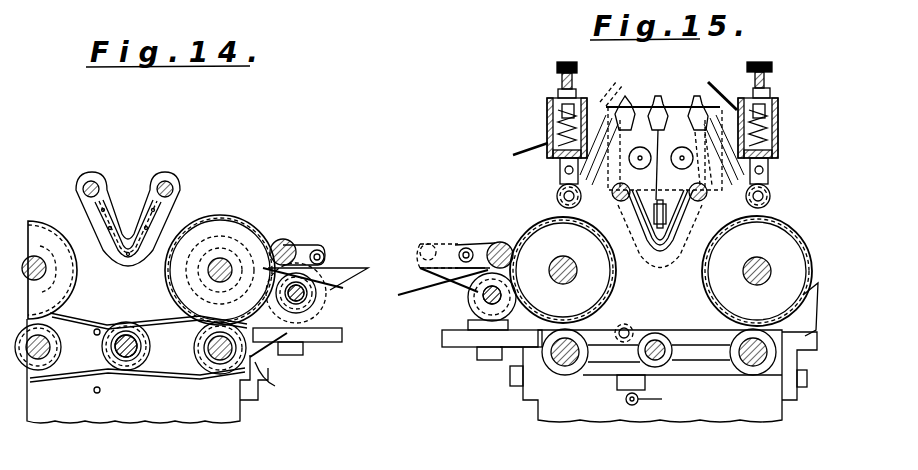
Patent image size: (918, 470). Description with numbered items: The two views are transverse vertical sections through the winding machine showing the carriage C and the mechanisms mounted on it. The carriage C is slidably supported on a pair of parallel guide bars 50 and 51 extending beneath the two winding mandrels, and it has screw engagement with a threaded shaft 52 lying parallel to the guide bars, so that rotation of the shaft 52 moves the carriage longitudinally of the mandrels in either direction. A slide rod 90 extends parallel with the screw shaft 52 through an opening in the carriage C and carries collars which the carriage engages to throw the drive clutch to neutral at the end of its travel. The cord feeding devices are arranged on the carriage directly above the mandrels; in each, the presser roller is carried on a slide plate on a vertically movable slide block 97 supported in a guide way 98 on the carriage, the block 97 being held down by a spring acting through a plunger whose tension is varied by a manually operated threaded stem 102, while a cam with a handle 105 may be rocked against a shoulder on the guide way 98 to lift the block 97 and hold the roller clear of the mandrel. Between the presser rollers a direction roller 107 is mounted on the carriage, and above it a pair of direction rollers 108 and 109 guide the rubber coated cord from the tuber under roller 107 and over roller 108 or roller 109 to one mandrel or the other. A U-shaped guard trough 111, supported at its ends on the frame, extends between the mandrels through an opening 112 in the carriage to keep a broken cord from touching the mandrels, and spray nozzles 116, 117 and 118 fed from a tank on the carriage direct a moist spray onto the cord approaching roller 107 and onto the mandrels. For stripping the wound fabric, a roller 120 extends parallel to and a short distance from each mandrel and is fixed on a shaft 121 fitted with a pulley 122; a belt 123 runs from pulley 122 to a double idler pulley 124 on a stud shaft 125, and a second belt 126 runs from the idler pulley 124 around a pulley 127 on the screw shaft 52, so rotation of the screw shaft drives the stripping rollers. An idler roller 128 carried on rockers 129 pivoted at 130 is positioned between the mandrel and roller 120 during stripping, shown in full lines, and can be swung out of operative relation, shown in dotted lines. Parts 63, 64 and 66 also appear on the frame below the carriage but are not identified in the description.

In FIG. 15, the carriage C is at (712, 368).
In FIG. 15, the guide bar 50 is at (566, 366).
In FIG. 15, the guide bar 51 is at (753, 366).
In FIG. 14, the threaded shaft 52 is at (125, 358).
In FIG. 15, the pin 63 is at (625, 401).
In FIG. 15, the arm 64 is at (660, 400).
In FIG. 15, the block 66 is at (630, 382).
In FIG. 15, the slide rod 90 is at (624, 327).
In FIG. 15, the slide block 97 is at (778, 138).
In FIG. 15, the guide way 98 is at (772, 98).
In FIG. 15, the threaded stem 102 is at (768, 74).
In FIG. 15, the handle 105 is at (542, 128).
In FIG. 15, the direction roller 107 is at (676, 250).
In FIG. 15, the direction roller 108 is at (682, 147).
In FIG. 15, the direction roller 109 is at (640, 147).
In FIG. 14, the guard trough 111 is at (124, 256).
In FIG. 15, the guard trough 111 is at (650, 248).
In FIG. 15, the opening 112 is at (660, 258).
In FIG. 15, the spray nozzle 116 is at (630, 95).
In FIG. 15, the spray nozzle 117 is at (658, 96).
In FIG. 15, the spray nozzle 118 is at (696, 96).
In FIG. 14, the roller 120 is at (318, 300).
In FIG. 14, the shaft 121 is at (305, 293).
In FIG. 14, the pulley 122 is at (320, 331).
In FIG. 14, the belt 123 is at (268, 352).
In FIG. 14, the double idler pulley 124 is at (213, 362).
In FIG. 14, the stud shaft 125 is at (272, 380).
In FIG. 14, the belt 126 is at (160, 380).
In FIG. 14, the pulley 127 is at (126, 330).
In FIG. 14, the idler roller 128 is at (285, 239).
In FIG. 14, the rocker 129 is at (310, 245).
In FIG. 14, the pivot 130 is at (321, 253).